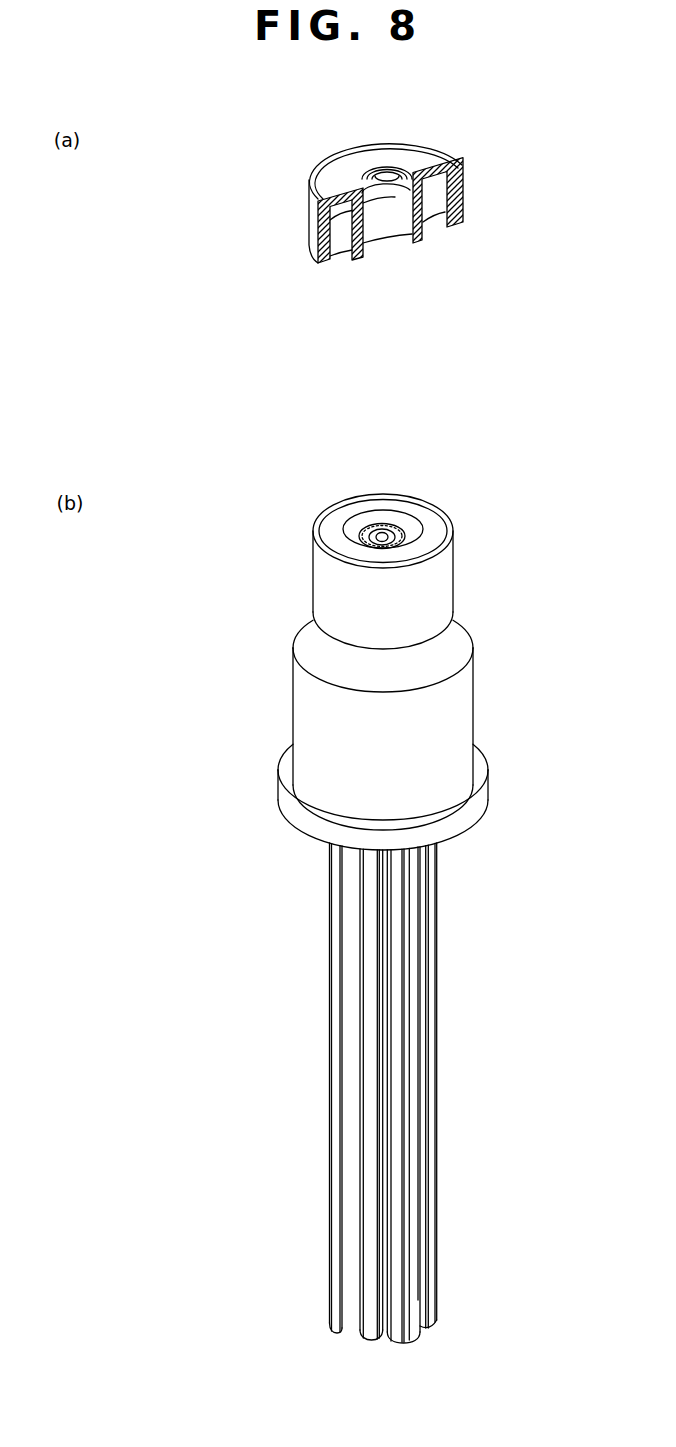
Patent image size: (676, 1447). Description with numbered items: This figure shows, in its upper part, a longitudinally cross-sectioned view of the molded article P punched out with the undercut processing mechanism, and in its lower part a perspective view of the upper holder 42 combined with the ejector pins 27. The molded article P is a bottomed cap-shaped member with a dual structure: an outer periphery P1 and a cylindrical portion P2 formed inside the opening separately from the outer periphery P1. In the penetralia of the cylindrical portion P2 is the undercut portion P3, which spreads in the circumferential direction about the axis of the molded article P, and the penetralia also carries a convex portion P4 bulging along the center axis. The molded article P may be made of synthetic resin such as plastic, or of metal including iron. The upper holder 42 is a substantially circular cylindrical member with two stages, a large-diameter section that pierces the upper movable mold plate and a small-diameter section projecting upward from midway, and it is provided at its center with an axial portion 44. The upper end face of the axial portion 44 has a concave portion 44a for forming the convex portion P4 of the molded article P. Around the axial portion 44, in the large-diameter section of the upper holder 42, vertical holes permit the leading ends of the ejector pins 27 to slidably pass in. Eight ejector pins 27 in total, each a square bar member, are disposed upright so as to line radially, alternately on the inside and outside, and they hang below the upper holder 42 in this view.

The molded article P is at (418, 137).
The outer periphery P1 is at (309, 231).
The cylindrical portion P2 is at (346, 260).
The undercut portion P3 is at (402, 215).
The convex portion P4 is at (377, 207).
The upper holder 42 is at (470, 616).
The axial portion 44 is at (376, 527).
The concave portion 44a is at (392, 532).
The ejector pins 27 is at (360, 1107).